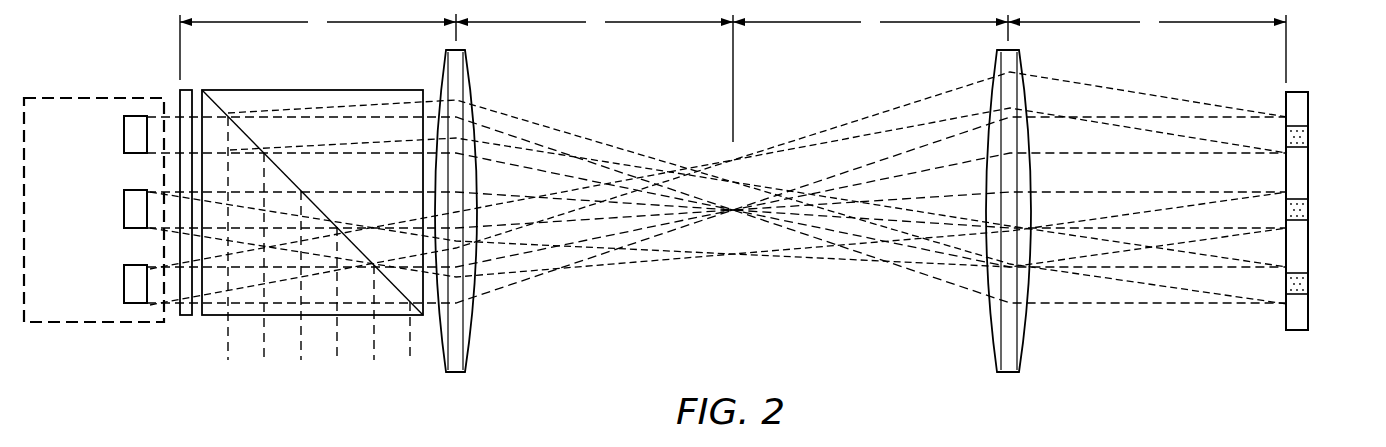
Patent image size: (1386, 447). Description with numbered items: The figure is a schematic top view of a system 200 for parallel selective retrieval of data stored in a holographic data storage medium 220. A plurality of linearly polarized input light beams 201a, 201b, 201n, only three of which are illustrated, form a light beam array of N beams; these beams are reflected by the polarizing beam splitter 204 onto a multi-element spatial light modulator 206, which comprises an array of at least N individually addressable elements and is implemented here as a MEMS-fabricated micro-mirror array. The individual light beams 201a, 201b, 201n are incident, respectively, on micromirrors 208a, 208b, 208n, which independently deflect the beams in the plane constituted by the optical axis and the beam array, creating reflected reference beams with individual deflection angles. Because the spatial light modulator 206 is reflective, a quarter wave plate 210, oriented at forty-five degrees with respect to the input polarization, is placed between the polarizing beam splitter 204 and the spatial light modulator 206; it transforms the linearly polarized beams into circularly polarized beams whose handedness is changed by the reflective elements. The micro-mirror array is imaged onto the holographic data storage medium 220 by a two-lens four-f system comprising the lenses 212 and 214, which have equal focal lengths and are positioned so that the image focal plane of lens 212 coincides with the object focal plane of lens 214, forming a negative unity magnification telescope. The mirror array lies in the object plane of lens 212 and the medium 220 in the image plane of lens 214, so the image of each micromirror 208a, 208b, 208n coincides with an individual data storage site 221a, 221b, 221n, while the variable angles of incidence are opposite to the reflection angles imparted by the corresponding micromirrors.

The system for parallel selective retrieval of data 200 is at (851, 385).
The linearly polarized light beam 201a is at (391, 332).
The linearly polarized light beam 201b is at (324, 360).
The linearly polarized light beam 201n is at (246, 334).
The polarizing beam splitter 204 is at (295, 90).
The spatial light modulator 206 is at (92, 328).
The micromirror 208a is at (123, 288).
The micromirror 208b is at (123, 212).
The micromirror 208n is at (123, 130).
The quarter wave plate 210 is at (184, 315).
The lens 212 is at (476, 329).
The lens 214 is at (990, 334).
The holographic data storage medium 220 is at (1297, 330).
The data storage site 221a is at (1308, 135).
The data storage site 221b is at (1308, 208).
The data storage site 221n is at (1308, 290).